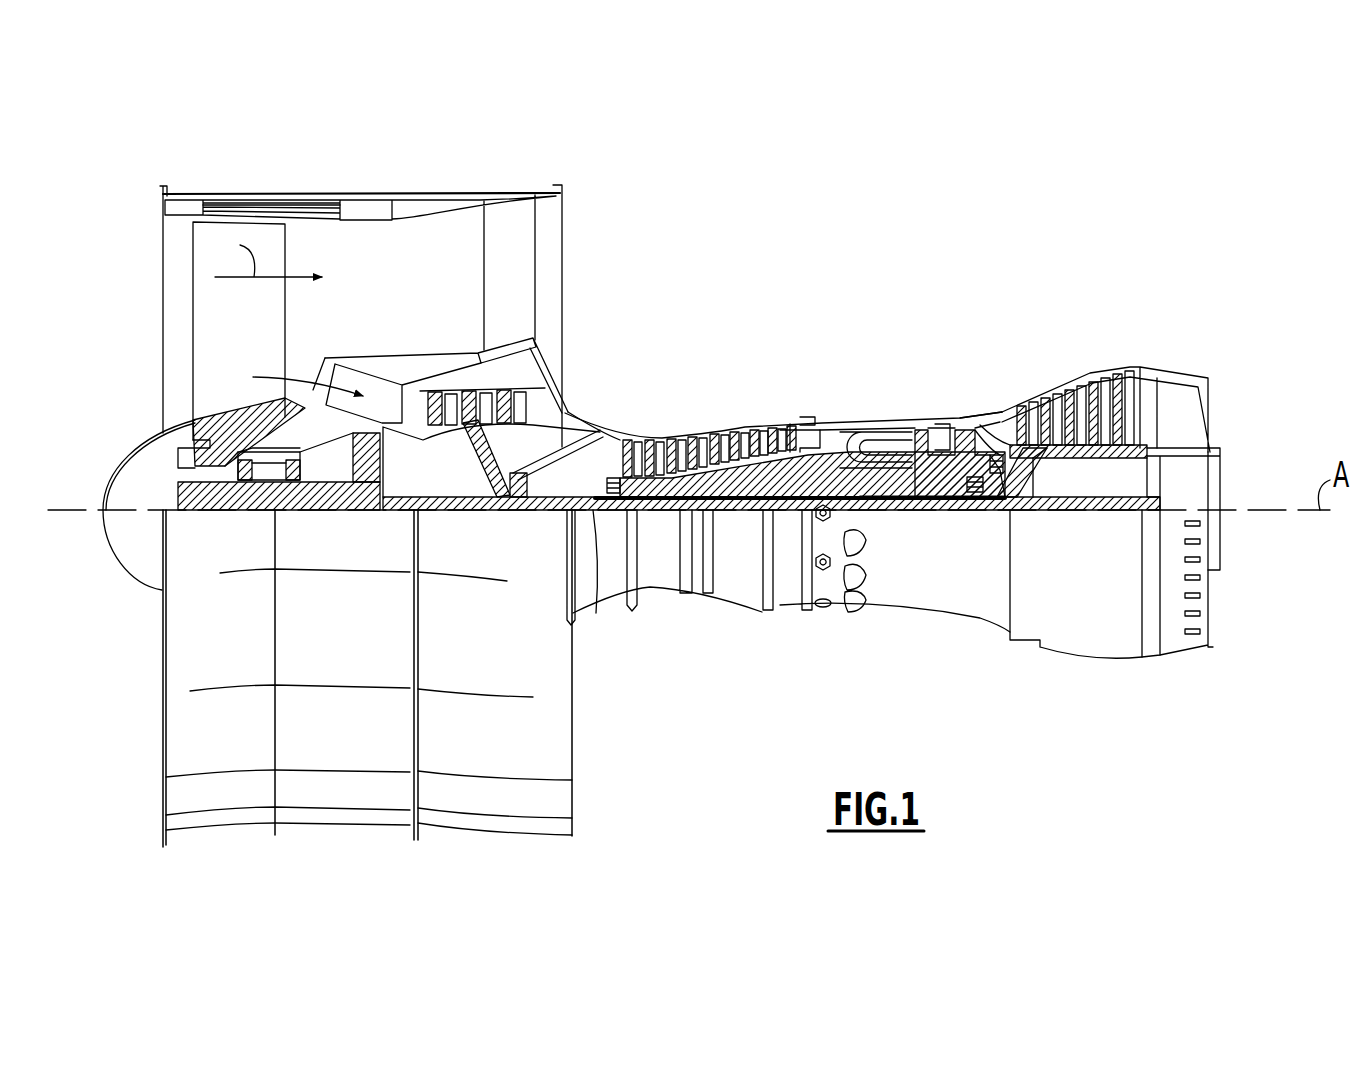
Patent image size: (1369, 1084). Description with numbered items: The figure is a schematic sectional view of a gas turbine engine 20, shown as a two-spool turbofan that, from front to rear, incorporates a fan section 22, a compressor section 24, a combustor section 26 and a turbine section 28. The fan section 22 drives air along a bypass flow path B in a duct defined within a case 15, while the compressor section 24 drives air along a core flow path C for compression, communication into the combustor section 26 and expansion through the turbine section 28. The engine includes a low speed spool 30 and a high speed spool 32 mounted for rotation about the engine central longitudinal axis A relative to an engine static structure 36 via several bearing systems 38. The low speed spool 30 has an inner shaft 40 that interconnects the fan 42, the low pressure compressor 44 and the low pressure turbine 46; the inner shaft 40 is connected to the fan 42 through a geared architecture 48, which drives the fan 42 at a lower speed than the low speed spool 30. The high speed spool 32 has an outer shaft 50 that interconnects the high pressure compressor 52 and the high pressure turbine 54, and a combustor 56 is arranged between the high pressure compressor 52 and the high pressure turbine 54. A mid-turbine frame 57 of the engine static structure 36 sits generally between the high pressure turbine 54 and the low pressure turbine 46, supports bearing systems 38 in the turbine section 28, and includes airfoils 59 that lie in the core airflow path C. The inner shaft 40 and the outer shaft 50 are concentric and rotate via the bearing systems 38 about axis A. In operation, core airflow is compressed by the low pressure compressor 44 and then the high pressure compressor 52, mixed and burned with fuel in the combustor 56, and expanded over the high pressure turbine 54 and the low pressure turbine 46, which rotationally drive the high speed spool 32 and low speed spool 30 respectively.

The gas turbine engine 20 is at (872, 252).
The fan section 22 is at (284, 184).
The case 15 is at (362, 200).
The fan 42 is at (254, 339).
The low pressure compressor 44 is at (477, 407).
The geared architecture 48 is at (372, 496).
The bearing systems 38 is at (513, 512).
The compressor section 24 is at (624, 404).
The high pressure compressor 52 is at (712, 458).
The high speed spool 32 is at (790, 445).
The combustor section 26 is at (868, 390).
The combustor 56 is at (866, 450).
The high pressure turbine 54 is at (946, 420).
The mid-turbine frame 57 is at (990, 405).
The turbine section 28 is at (1033, 352).
The low pressure turbine 46 is at (1086, 376).
The airfoils 59 is at (1025, 478).
The inner shaft 40 is at (595, 516).
The low speed spool 30 is at (741, 516).
The engine static structure 36 is at (784, 612).
The outer shaft 50 is at (882, 500).